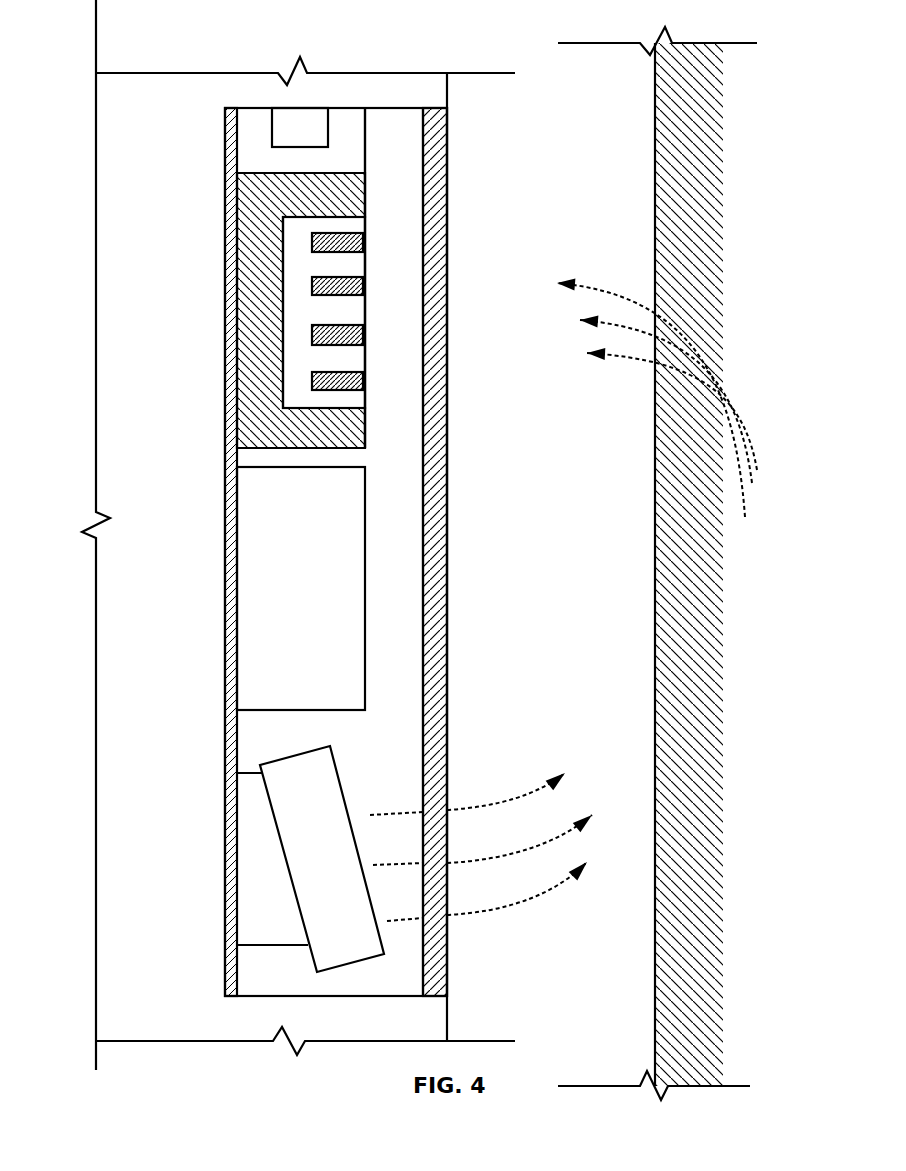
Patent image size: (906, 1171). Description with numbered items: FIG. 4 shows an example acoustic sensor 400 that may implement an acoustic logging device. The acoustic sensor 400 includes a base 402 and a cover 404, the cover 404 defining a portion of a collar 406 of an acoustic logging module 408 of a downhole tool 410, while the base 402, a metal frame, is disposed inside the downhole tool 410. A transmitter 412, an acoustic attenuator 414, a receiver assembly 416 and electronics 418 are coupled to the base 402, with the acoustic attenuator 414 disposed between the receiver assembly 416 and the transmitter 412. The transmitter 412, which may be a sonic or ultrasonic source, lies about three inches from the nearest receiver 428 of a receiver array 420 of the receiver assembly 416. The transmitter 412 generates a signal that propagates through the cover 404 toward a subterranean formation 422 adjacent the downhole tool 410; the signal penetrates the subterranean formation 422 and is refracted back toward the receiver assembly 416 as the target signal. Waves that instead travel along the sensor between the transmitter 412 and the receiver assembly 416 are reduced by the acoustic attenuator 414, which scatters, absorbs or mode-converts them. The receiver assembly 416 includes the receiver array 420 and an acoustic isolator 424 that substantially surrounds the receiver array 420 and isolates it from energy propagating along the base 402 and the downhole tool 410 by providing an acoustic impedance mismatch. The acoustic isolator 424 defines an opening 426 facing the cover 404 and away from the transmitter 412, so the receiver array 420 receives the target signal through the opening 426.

The acoustic sensor 400 is at (462, 207).
The base 402 is at (228, 372).
The cover 404 is at (433, 138).
The collar 406 is at (158, 193).
The acoustic logging module 408 is at (113, 152).
The downhole tool 410 is at (400, 68).
The transmitter 412 is at (313, 778).
The acoustic attenuator 414 is at (342, 587).
The receiver assembly 416 is at (393, 454).
The electronics 418 is at (293, 117).
The receiver array 420 is at (404, 307).
The subterranean formation 422 is at (657, 563).
The acoustic isolator 424 is at (347, 202).
The opening 426 is at (333, 262).
The receiver 428 is at (365, 382).